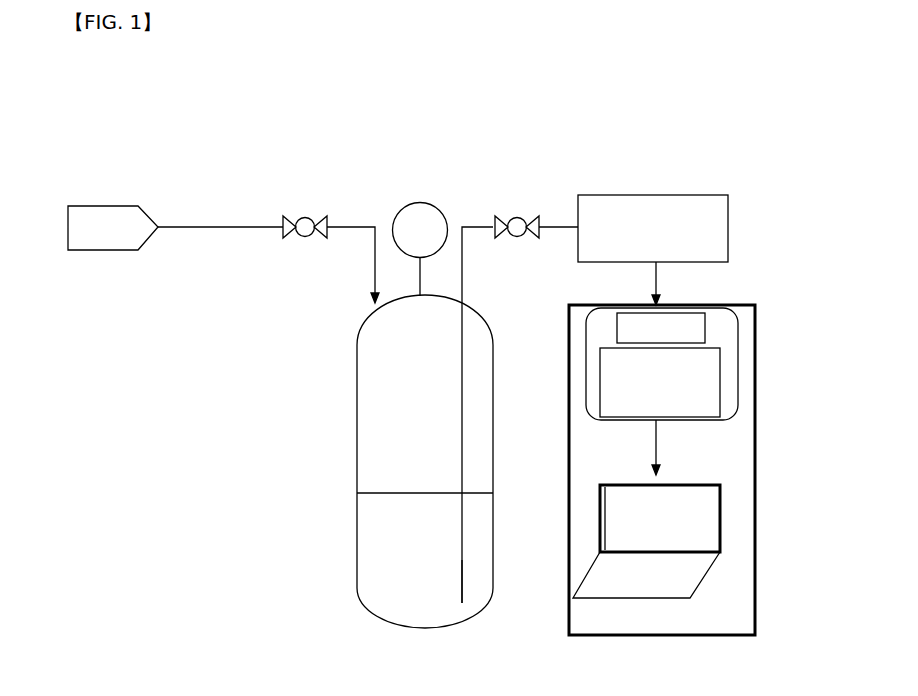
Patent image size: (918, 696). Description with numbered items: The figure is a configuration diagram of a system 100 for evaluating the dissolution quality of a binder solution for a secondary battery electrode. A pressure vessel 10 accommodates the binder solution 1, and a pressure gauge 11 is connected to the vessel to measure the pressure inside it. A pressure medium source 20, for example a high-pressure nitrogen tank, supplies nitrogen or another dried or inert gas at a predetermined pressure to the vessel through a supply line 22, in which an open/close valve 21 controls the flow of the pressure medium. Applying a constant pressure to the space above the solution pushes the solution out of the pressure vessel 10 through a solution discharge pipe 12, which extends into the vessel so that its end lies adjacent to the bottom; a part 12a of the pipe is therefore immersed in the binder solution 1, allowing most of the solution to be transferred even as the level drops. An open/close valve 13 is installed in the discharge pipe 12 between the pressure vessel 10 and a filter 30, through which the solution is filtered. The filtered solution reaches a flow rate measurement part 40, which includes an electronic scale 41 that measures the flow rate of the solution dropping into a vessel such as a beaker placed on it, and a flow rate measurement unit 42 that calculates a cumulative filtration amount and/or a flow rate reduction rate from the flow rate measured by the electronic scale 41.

The system for evaluating dissolution quality of a binder solution 100 is at (811, 124).
The binder solution 1 is at (370, 585).
The pressure vessel 10 is at (342, 416).
The pressure gauge 11 is at (418, 214).
The solution discharge pipe 12 is at (462, 281).
The part of the solution discharge pipe 12a is at (462, 410).
The open/close valve 13 is at (517, 217).
The pressure medium source 20 is at (120, 218).
The open/close valve 21 is at (306, 218).
The supply line 22 is at (215, 227).
The filter 30 is at (646, 194).
The flow rate measurement part 40 is at (715, 470).
The electronic scale 41 is at (738, 375).
The flow rate measurement unit 42 is at (705, 530).